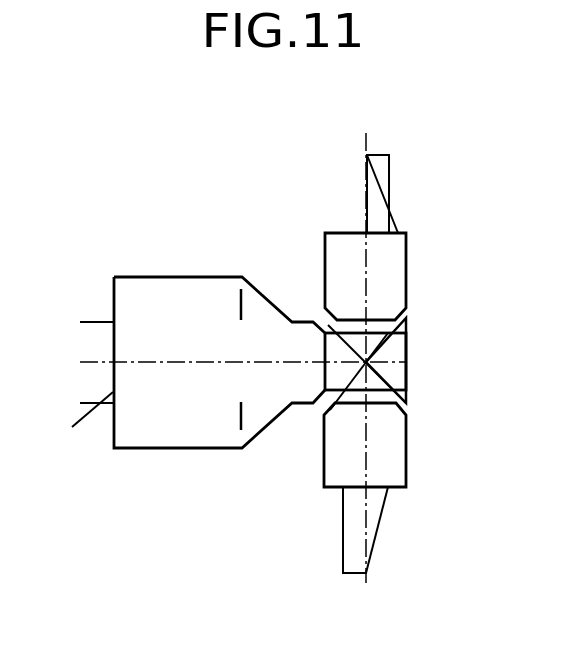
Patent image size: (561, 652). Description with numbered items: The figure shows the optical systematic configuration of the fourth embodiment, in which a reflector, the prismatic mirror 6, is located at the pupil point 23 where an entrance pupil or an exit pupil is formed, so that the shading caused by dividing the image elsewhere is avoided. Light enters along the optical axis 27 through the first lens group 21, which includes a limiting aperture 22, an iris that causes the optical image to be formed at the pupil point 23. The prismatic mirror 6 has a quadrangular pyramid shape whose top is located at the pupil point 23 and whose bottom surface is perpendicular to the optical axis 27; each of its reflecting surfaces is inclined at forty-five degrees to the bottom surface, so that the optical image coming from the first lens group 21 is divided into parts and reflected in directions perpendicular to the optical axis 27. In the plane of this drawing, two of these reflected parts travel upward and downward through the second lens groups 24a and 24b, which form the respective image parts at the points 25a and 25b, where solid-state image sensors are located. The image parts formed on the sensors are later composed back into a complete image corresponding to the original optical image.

The prismatic mirror 6 is at (406, 363).
The first lens group 21 is at (152, 277).
The limiting aperture 22 is at (237, 425).
The pupil point 23 is at (330, 328).
The second lens group 24a is at (406, 262).
The second lens group 24b is at (406, 448).
The solid-state image sensor point 25a is at (380, 155).
The solid-state image sensor point 25b is at (343, 574).
The optical axis 27 is at (92, 362).